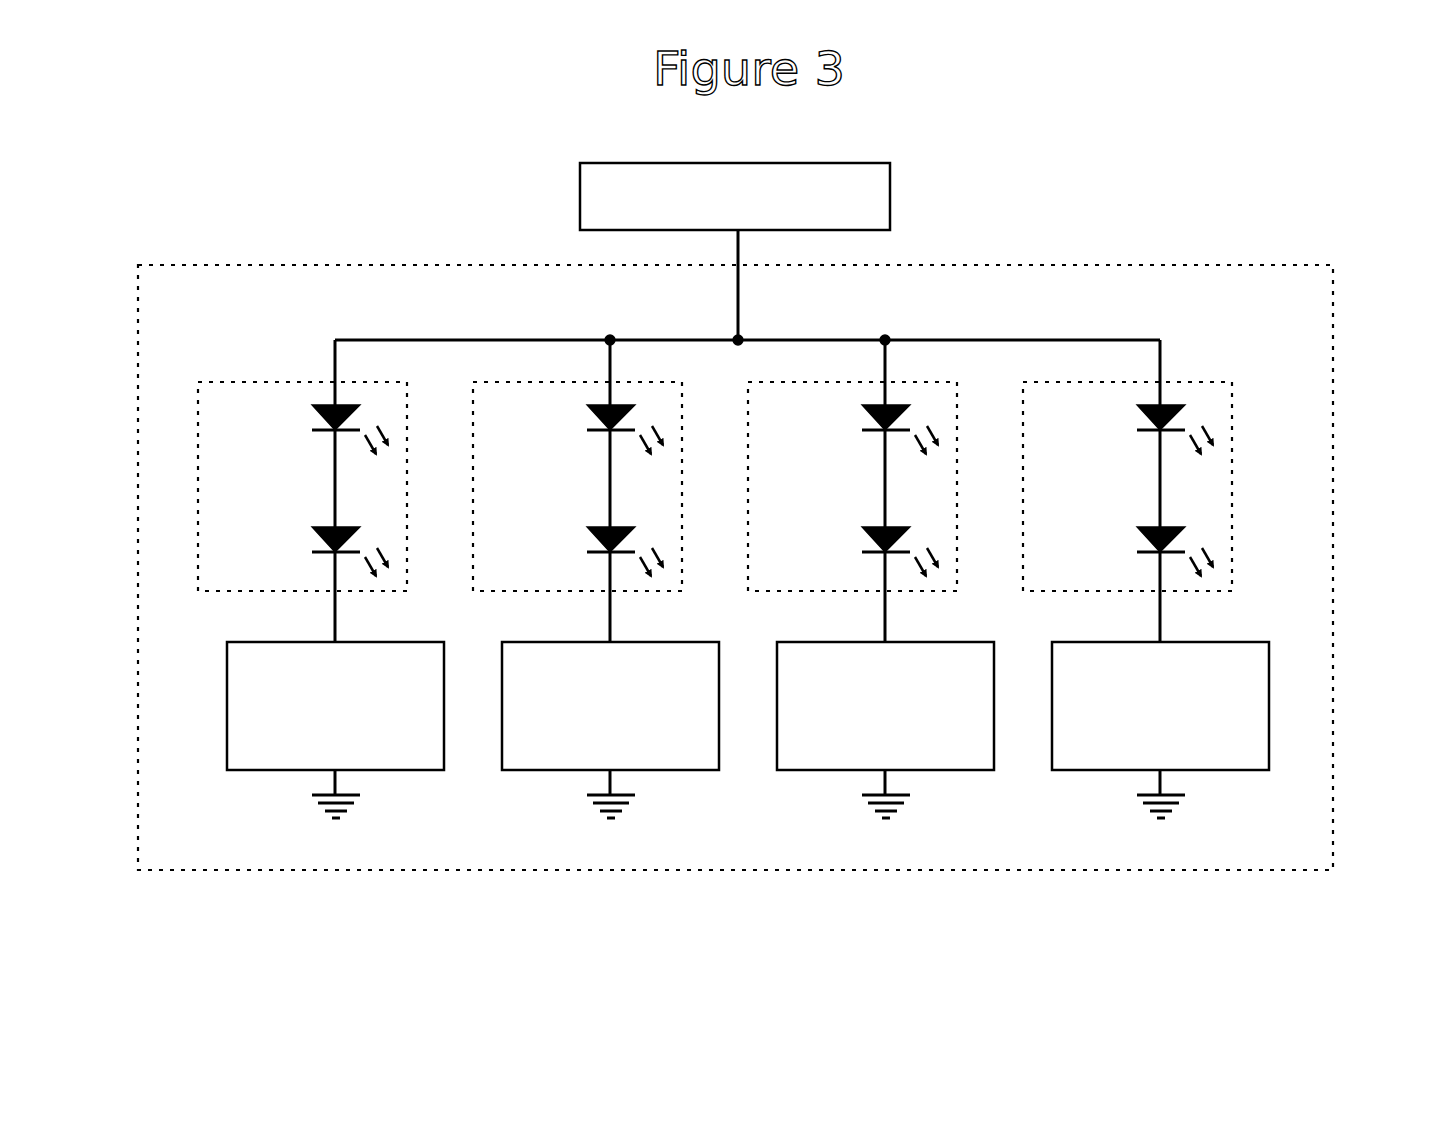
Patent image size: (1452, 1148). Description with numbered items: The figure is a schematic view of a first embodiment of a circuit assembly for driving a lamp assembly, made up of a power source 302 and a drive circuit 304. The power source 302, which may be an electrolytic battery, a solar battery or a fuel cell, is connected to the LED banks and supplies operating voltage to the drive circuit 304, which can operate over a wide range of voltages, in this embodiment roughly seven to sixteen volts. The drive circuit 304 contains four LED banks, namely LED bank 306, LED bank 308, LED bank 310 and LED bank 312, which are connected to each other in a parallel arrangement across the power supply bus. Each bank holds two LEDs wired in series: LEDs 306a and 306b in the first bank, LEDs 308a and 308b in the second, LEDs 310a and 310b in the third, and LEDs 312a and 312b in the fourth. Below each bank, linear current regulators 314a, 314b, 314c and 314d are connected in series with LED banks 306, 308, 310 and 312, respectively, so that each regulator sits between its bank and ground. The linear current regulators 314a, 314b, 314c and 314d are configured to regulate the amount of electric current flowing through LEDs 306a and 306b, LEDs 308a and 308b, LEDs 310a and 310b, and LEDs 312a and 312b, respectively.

The power source 302 is at (891, 197).
The drive circuit 304 is at (1333, 570).
The LED bank 306 is at (356, 383).
The LED 306a is at (322, 527).
The LED 306b is at (322, 405).
The LED bank 308 is at (572, 383).
The LED 308a is at (597, 527).
The LED 308b is at (597, 405).
The LED bank 310 is at (775, 383).
The LED 310a is at (872, 527).
The LED 310b is at (872, 405).
The LED bank 312 is at (1058, 383).
The LED 312a is at (1147, 527).
The LED 312b is at (1147, 405).
The linear current regulator 314a is at (444, 717).
The linear current regulator 314b is at (719, 717).
The linear current regulator 314c is at (994, 717).
The linear current regulator 314d is at (1269, 717).